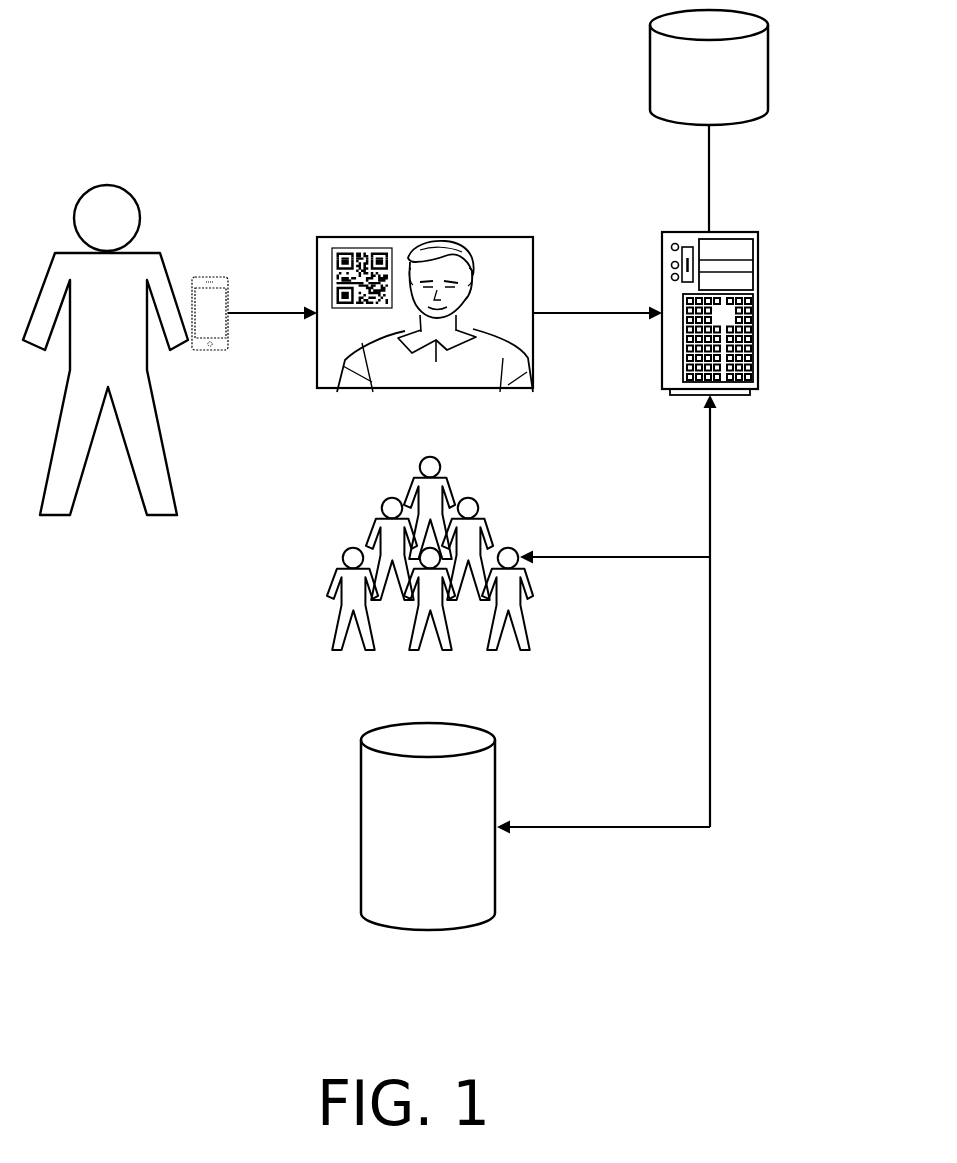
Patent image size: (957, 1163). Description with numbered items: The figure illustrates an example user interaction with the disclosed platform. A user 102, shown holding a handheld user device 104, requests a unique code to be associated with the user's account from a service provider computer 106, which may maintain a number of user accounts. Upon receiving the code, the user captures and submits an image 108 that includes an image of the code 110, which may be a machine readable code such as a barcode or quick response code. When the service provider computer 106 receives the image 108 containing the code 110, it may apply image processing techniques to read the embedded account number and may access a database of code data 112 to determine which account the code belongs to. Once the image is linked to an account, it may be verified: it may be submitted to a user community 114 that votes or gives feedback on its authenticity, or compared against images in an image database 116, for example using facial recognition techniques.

The user 102 is at (127, 192).
The user device 104 is at (228, 290).
The service provider computer 106 is at (758, 257).
The image 108 is at (533, 255).
The code 110 is at (392, 252).
The code data 112 is at (709, 67).
The user community 114 is at (478, 507).
The image database 116 is at (428, 826).